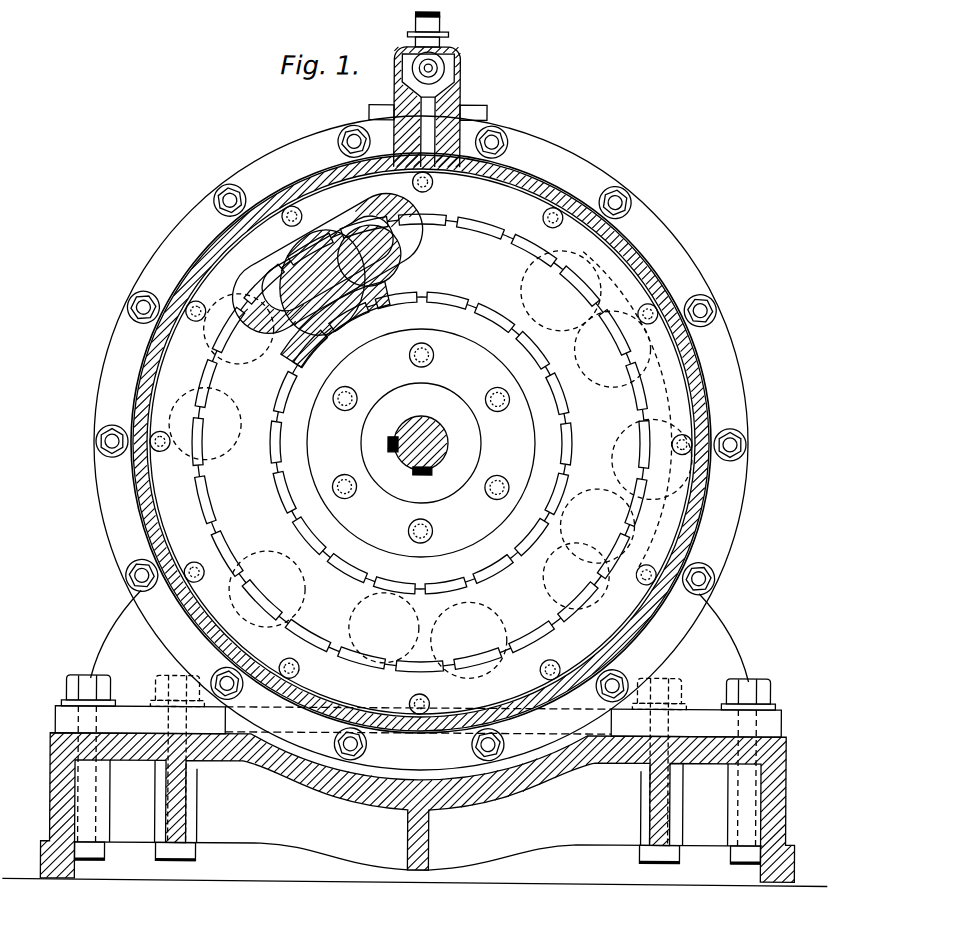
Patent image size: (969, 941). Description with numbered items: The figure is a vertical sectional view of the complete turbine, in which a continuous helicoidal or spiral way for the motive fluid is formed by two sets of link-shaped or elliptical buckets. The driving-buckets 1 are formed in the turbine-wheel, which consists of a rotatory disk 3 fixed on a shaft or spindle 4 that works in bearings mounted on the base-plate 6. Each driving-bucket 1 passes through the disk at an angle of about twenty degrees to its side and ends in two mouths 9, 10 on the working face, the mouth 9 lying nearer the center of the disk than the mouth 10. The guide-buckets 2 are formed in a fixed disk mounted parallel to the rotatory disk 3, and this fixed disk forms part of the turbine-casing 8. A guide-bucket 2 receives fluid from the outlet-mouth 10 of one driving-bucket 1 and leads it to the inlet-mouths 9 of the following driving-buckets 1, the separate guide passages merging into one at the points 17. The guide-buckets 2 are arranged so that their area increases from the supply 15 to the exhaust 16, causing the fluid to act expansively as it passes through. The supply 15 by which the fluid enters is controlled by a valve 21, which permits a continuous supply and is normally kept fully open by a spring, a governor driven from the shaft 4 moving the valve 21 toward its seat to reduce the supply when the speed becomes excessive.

The driving-buckets 1 is at (505, 282).
The guide-buckets 2 is at (455, 270).
The rotatory disk 3 is at (421, 443).
The shaft or spindle 4 is at (408, 417).
The base-plate 6 is at (415, 737).
The turbine-casing 8 is at (650, 272).
The mouth of driving-bucket 9 is at (508, 345).
The mouth of driving-bucket 10 is at (592, 284).
The supply 15 is at (438, 101).
The exhaust 16 is at (680, 458).
The merging points 17 is at (283, 456).
The valve 21 is at (442, 68).